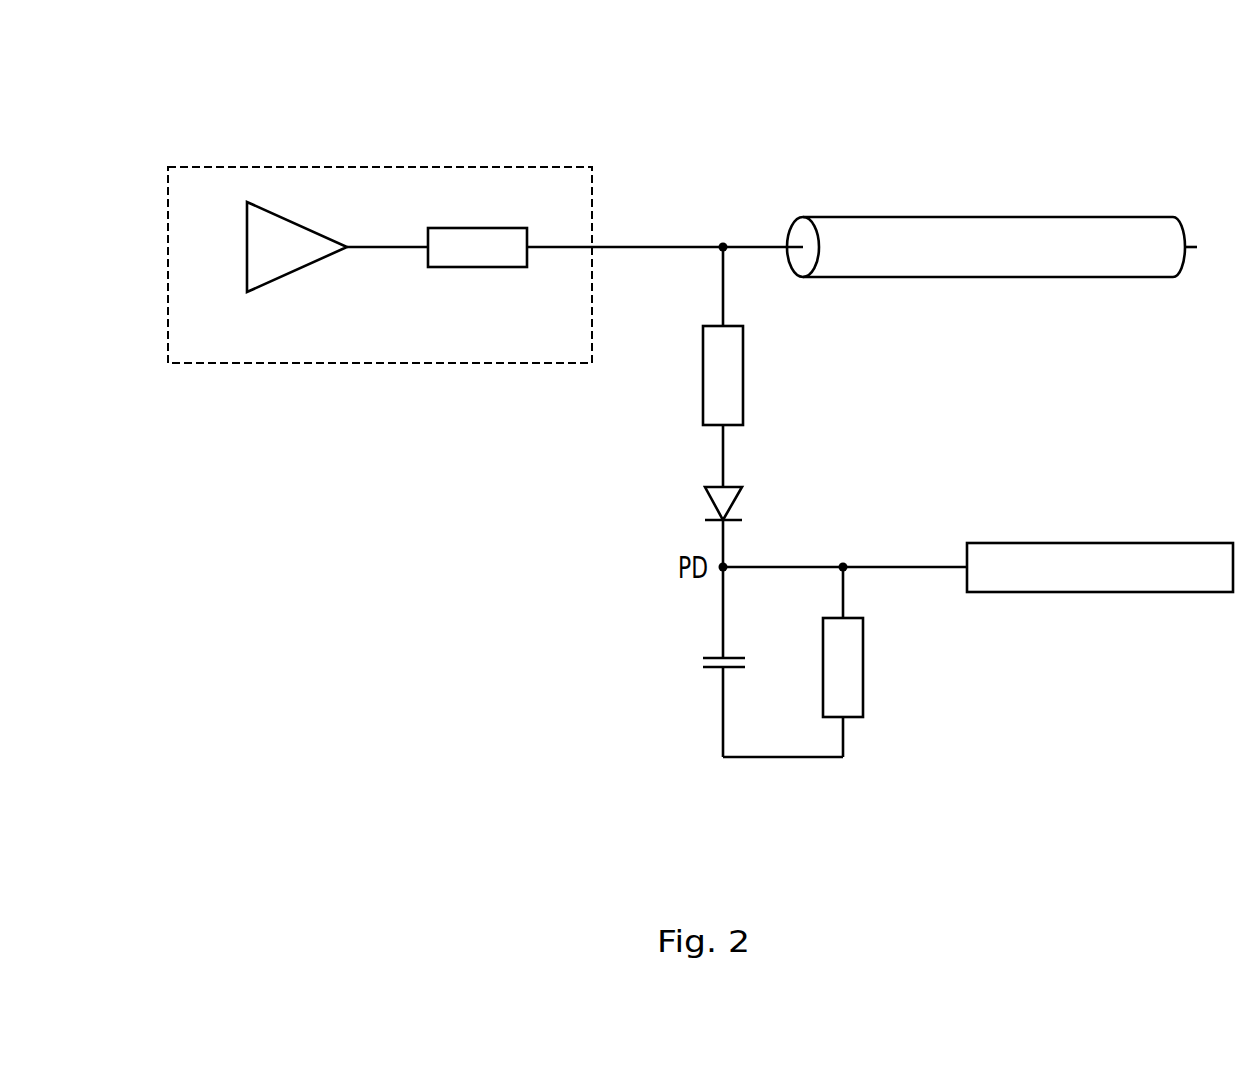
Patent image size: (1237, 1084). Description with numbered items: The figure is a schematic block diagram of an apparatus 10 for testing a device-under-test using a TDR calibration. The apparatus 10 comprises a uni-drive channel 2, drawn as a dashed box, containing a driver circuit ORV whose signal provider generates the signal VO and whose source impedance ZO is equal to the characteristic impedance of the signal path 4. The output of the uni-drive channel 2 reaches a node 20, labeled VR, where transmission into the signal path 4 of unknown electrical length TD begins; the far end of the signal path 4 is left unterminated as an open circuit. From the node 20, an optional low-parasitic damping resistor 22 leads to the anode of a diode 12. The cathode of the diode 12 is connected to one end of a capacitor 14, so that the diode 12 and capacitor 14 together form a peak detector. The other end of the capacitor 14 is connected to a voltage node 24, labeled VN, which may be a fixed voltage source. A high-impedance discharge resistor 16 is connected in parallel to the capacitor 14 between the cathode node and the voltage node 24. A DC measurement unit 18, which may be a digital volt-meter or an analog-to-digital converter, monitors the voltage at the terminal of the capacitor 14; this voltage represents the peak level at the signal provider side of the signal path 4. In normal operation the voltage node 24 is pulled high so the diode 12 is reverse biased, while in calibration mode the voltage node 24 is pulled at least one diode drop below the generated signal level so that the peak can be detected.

The uni-drive channel 2 is at (390, 167).
The signal path 4 is at (1033, 193).
The apparatus 10 is at (832, 133).
The diode 12 is at (775, 504).
The capacitor 14 is at (659, 722).
The resistor 16 is at (925, 667).
The DC measurement unit 18 is at (1098, 543).
The node 20 is at (703, 193).
The damping resistor 22 is at (790, 363).
The voltage node 24 is at (783, 800).